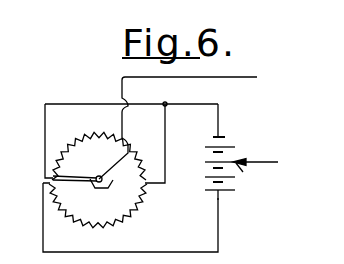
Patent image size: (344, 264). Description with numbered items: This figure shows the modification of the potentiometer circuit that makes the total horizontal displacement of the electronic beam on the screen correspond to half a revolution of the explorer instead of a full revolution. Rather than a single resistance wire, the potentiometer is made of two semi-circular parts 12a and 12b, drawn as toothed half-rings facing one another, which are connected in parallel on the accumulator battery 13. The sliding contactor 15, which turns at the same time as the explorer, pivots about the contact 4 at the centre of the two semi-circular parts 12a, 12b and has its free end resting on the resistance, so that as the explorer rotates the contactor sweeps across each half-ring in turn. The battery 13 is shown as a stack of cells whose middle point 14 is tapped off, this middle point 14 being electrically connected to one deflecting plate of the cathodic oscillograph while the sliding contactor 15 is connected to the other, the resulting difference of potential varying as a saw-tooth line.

The semi-circular part of the potentiometer 12a is at (134, 214).
The semi-circular part of the potentiometer 12b is at (74, 139).
The sliding contactor 15 is at (68, 174).
The pivot contact 4 is at (99, 175).
The accumulator battery 13 is at (228, 150).
The middle point of the battery 14 is at (232, 173).